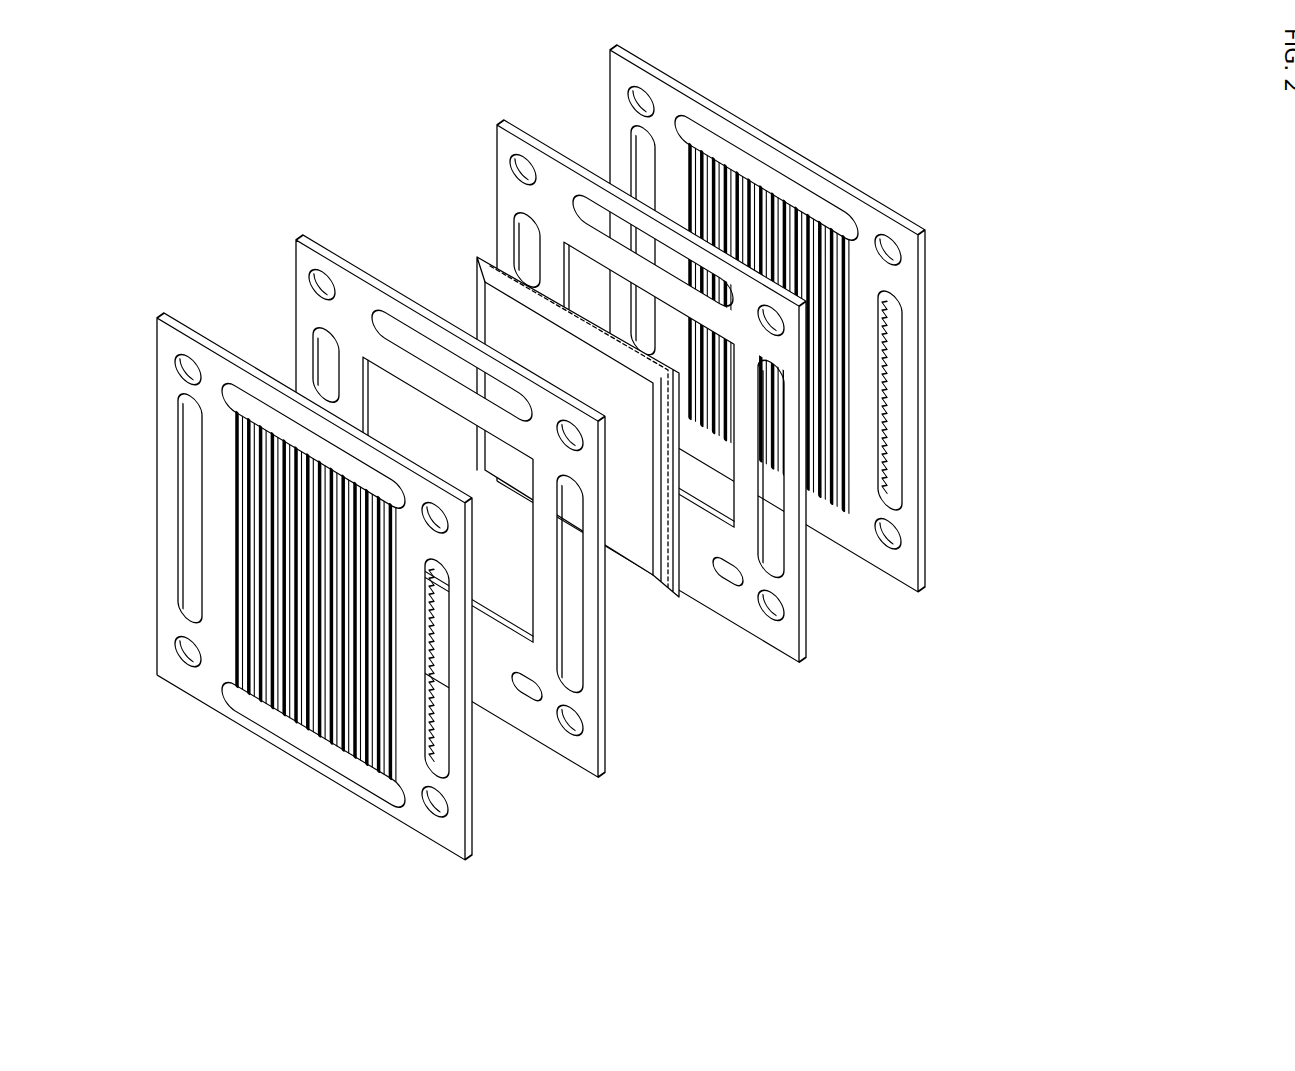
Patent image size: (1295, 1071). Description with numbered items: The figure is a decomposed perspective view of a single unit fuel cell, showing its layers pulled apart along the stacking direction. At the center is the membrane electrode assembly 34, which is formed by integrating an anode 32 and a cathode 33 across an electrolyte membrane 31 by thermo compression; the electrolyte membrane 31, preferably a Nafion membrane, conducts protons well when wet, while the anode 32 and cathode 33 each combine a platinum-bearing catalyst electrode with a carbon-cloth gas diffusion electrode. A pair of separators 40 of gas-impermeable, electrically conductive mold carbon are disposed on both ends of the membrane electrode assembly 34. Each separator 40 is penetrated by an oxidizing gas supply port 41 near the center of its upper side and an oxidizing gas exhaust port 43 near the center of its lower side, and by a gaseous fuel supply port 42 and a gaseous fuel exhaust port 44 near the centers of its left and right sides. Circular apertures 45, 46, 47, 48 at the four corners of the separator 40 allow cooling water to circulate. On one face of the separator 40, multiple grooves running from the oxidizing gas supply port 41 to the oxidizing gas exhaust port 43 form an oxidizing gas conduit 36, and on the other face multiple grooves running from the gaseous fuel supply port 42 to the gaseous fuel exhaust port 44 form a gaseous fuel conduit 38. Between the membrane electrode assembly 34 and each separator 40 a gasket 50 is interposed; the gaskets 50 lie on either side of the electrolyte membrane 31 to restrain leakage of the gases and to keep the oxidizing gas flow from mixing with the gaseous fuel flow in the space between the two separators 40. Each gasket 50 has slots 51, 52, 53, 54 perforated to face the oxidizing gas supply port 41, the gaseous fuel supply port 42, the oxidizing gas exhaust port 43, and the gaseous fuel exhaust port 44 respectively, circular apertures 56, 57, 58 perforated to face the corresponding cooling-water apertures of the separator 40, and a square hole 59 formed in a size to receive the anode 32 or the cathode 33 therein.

The electrolyte membrane 31 is at (490, 292).
The anode 32 is at (487, 345).
The cathode 33 is at (480, 258).
The membrane electrode assembly 34 is at (457, 333).
The oxidizing gas conduit 36 is at (372, 742).
The gaseous fuel conduit 38 is at (437, 676).
The separator 40 is at (405, 806).
The oxidizing gas supply port 41 is at (238, 402).
The gaseous fuel supply port 42 is at (192, 518).
The oxidizing gas exhaust port 43 is at (285, 705).
The gaseous fuel exhaust port 44 is at (445, 742).
The circular aperture 45 is at (185, 655).
The circular aperture 46 is at (445, 802).
The circular aperture 47 is at (182, 372).
The circular aperture 48 is at (440, 522).
The gasket 50 is at (588, 770).
The slot 51 is at (372, 312).
The slot 52 is at (320, 347).
The slot 53 is at (588, 722).
The slot 54 is at (575, 688).
The circular aperture 56 is at (588, 745).
The circular aperture 57 is at (316, 286).
The circular aperture 58 is at (578, 445).
The window opening 59 is at (398, 382).